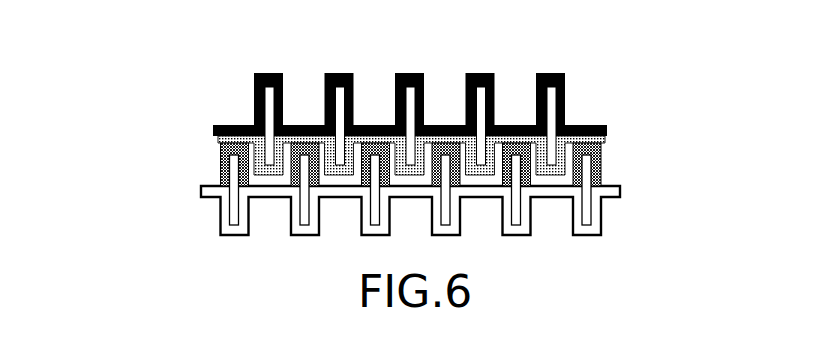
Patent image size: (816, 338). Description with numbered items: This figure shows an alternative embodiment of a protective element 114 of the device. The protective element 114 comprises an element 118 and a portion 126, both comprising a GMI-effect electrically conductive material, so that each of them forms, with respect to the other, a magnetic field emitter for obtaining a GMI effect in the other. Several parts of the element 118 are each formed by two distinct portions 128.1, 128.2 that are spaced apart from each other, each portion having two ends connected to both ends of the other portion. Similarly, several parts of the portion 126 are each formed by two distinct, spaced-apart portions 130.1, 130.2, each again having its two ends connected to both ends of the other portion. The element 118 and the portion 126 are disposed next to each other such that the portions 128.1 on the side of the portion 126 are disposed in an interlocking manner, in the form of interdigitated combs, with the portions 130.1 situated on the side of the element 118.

The protective element 114 is at (598, 62).
The element 118 is at (228, 125).
The portion 126 is at (202, 191).
The portion of a part of the element 128.1 is at (216, 138).
The portion of a part of the element 128.2 is at (253, 80).
The portion of a part of the portion 130.1 is at (218, 170).
The portion of a part of the portion 130.2 is at (229, 233).